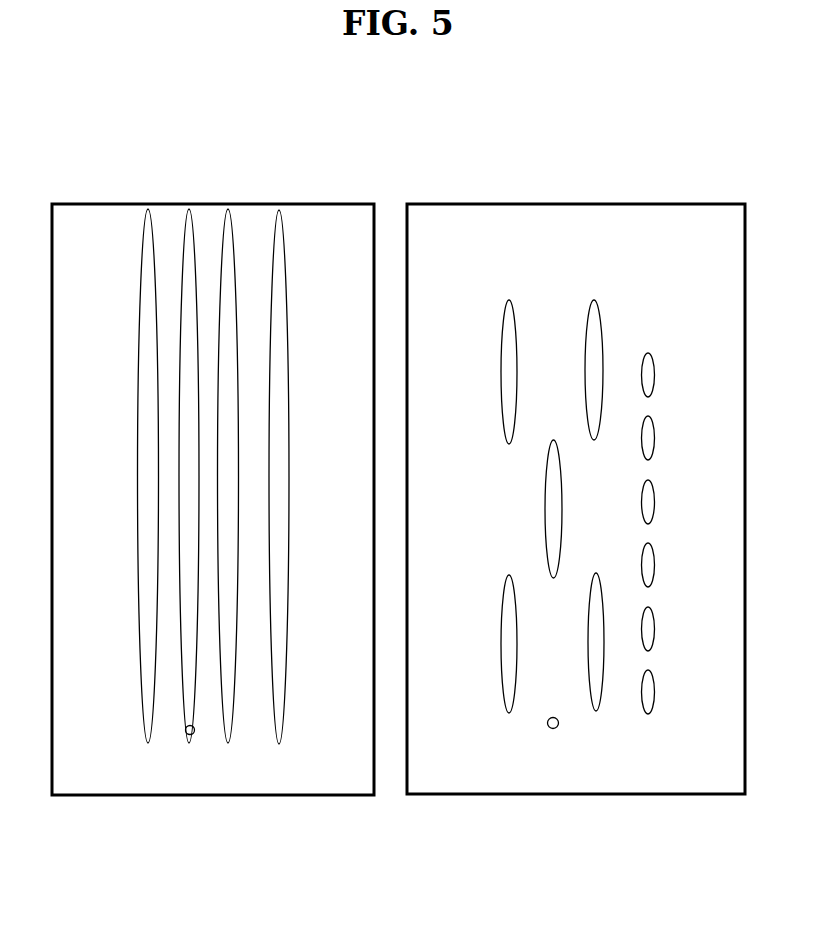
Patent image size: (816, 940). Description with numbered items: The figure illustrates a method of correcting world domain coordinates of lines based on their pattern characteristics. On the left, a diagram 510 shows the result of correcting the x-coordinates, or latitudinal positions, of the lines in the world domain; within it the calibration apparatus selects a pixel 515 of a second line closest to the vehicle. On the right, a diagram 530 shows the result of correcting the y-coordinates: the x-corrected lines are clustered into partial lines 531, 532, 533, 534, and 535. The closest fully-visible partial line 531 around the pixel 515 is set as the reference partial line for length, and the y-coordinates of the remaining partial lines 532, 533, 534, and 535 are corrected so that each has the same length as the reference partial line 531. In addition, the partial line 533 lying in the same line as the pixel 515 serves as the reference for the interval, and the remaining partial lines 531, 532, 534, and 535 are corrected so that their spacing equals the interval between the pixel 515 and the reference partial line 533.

The diagram showing a result of correcting the x-coordinates of lines 510 is at (213, 203).
The pixel of a second line 515 is at (194, 734).
The diagram showing a result of correcting the y-coordinates of the lines 530 is at (577, 203).
The closest partial line 531 is at (597, 712).
The partial line 532 is at (507, 712).
The partial line 533 is at (562, 510).
The partial line 534 is at (598, 314).
The partial line 535 is at (503, 316).